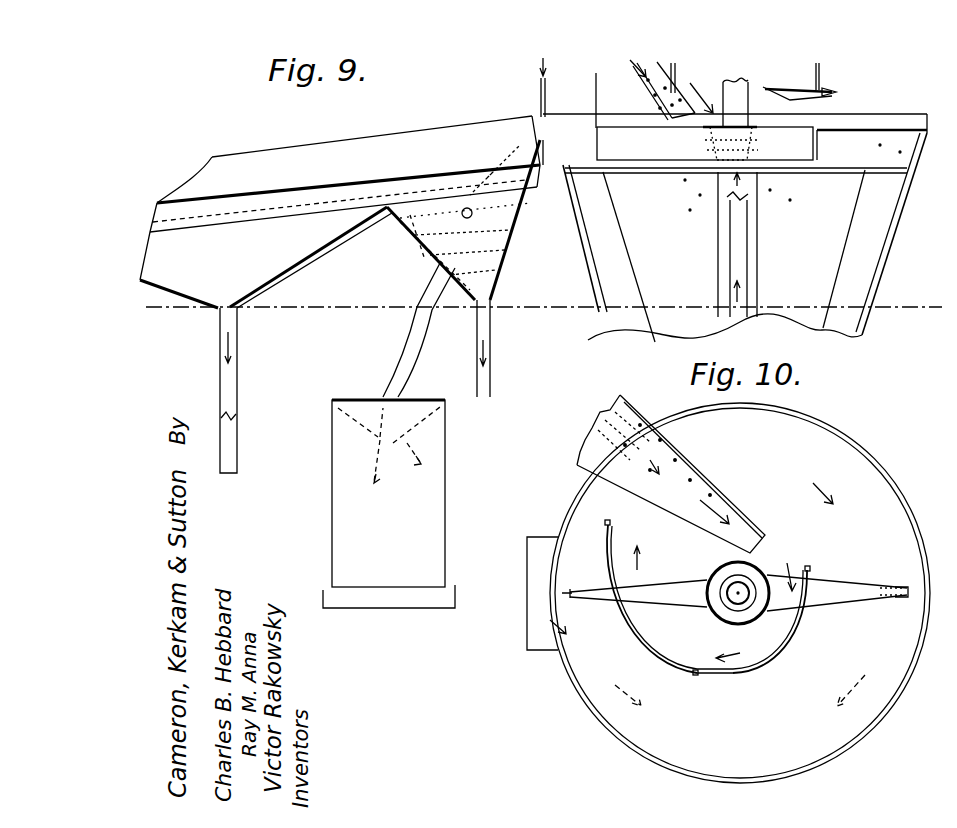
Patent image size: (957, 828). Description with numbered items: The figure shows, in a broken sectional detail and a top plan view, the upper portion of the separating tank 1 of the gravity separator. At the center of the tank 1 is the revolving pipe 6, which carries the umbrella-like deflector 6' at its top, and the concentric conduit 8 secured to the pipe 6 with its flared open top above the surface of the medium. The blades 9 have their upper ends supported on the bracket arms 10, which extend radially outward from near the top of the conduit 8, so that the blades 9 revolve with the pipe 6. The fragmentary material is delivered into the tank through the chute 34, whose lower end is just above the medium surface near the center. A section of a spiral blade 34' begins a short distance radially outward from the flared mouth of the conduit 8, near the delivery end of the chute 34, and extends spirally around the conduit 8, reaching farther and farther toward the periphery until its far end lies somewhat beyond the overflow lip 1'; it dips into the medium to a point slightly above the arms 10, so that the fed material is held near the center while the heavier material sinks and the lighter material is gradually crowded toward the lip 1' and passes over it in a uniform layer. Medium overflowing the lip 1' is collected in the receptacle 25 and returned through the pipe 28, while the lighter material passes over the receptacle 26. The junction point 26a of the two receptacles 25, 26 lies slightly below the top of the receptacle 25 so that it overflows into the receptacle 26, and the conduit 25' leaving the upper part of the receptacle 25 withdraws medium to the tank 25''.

In FIG. 9, the separating tank 1 is at (735, 227).
In FIG. 9, the overflow lip 1' is at (530, 111).
In FIG. 10, the overflow lip 1' is at (542, 579).
In FIG. 9, the pipe 6 is at (779, 94).
In FIG. 10, the deflector 6' is at (732, 584).
In FIG. 10, the conduit 8 is at (740, 606).
In FIG. 9, the blades 9 is at (641, 258).
In FIG. 10, the blades 9 is at (597, 600).
In FIG. 9, the bracket arms 10 is at (660, 172).
In FIG. 10, the bracket arms 10 is at (842, 582).
In FIG. 9, the receptacle 25 is at (467, 220).
In FIG. 9, the conduit 25' is at (405, 330).
In FIG. 9, the tank 25'' is at (408, 504).
In FIG. 9, the receptacle 26 is at (266, 340).
In FIG. 9, the junction point 26a is at (387, 207).
In FIG. 9, the pipe 28 is at (494, 362).
In FIG. 10, the chute 34 is at (671, 474).
In FIG. 9, the spiral blade 34' is at (695, 132).
In FIG. 10, the spiral blade 34' is at (704, 597).